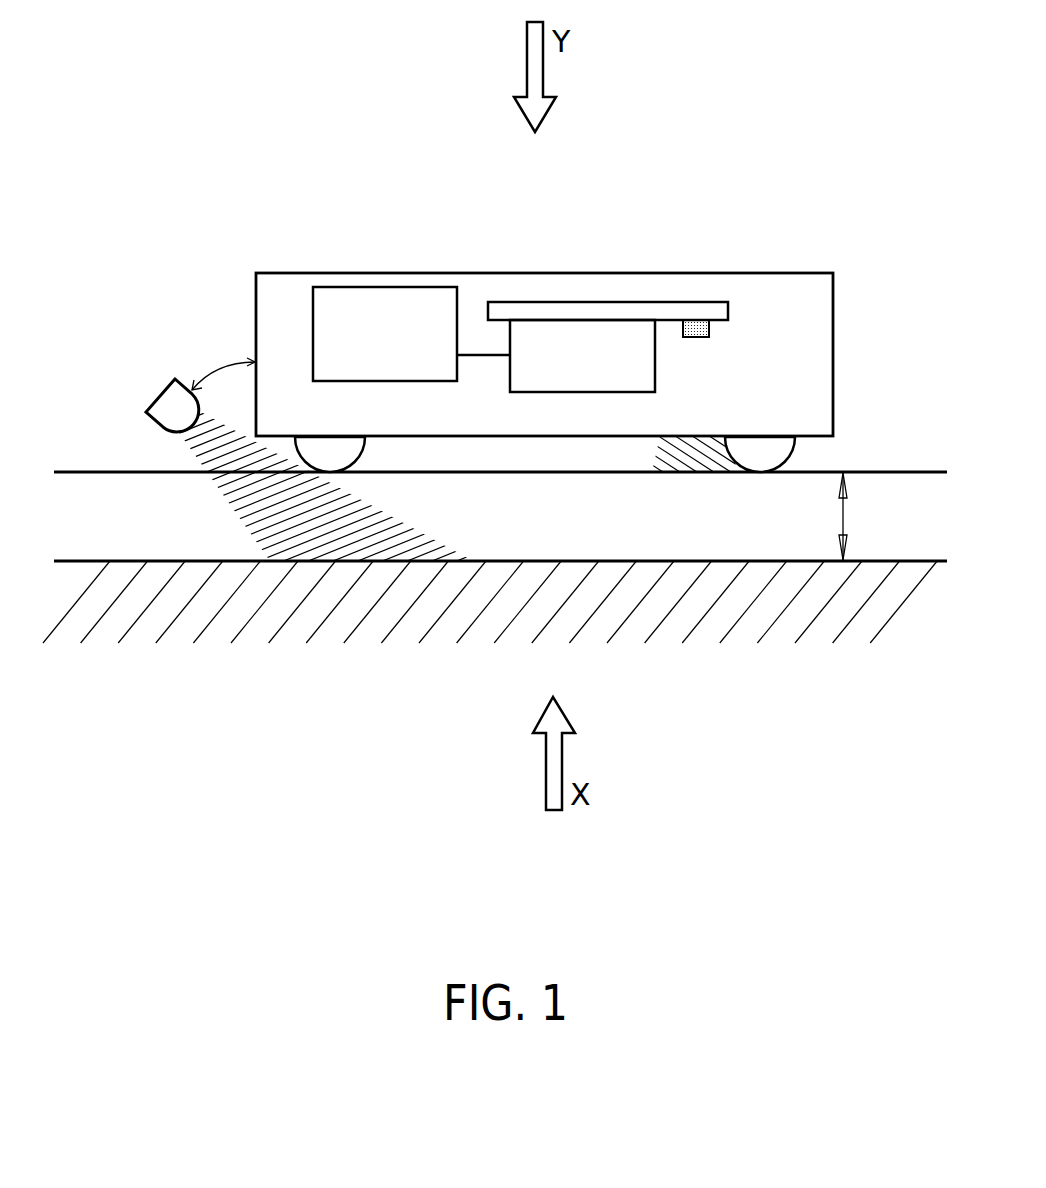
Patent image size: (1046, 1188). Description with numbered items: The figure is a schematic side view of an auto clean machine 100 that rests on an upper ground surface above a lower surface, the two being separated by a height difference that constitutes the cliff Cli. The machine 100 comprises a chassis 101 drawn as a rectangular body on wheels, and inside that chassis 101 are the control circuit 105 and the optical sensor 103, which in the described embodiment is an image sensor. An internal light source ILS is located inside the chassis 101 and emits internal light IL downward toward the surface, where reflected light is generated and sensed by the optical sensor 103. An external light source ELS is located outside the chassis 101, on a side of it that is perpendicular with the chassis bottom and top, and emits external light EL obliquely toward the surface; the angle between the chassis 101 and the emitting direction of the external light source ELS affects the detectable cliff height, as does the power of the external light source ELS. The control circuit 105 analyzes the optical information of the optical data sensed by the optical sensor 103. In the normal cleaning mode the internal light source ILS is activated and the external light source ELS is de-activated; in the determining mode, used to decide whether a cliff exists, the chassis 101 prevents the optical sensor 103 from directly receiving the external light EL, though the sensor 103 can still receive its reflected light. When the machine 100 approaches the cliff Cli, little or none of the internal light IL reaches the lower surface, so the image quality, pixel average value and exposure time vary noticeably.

The auto clean machine 100 is at (815, 132).
The chassis 101 is at (297, 272).
The optical sensor 103 is at (583, 392).
The control circuit 105 is at (388, 287).
The external light source ELS is at (163, 393).
The external light EL is at (270, 522).
The internal light source ILS is at (710, 327).
The internal light IL is at (697, 393).
The cliff Cli is at (817, 516).